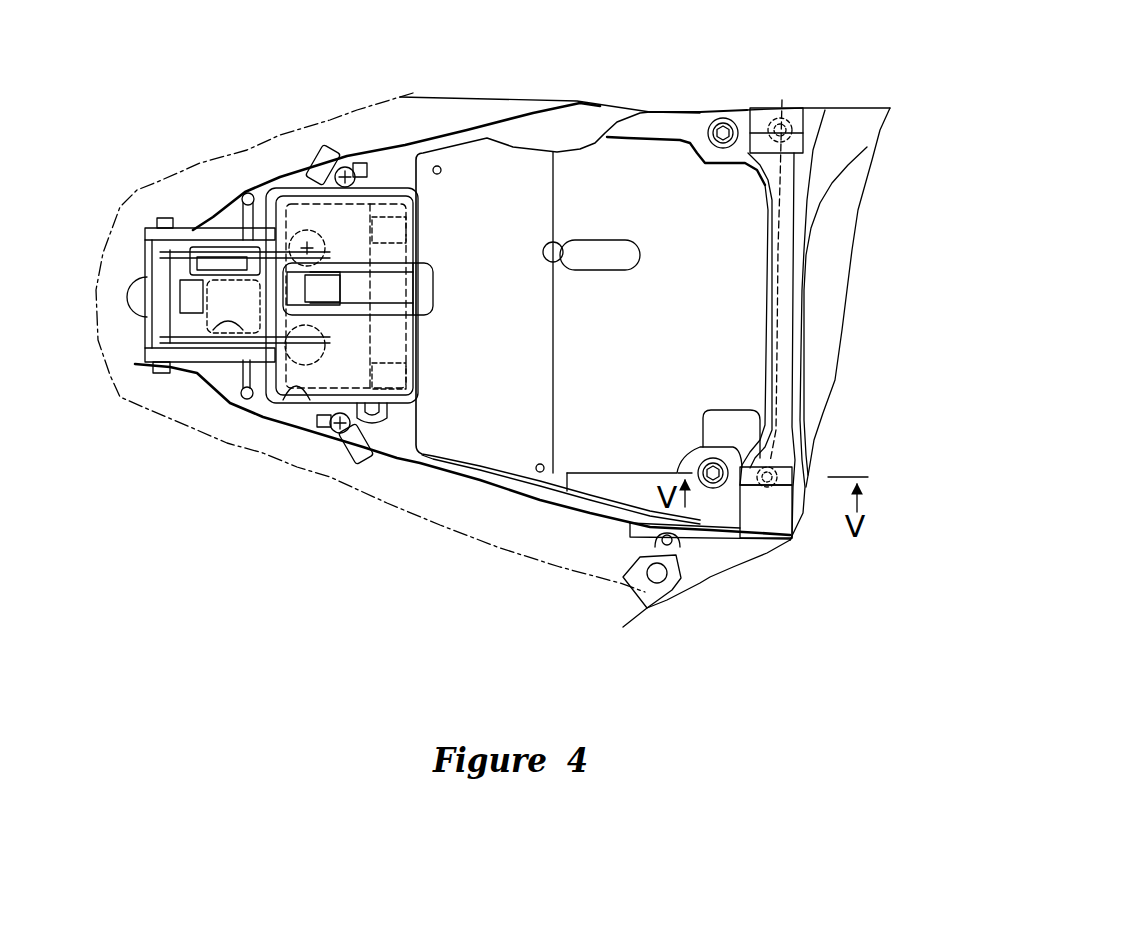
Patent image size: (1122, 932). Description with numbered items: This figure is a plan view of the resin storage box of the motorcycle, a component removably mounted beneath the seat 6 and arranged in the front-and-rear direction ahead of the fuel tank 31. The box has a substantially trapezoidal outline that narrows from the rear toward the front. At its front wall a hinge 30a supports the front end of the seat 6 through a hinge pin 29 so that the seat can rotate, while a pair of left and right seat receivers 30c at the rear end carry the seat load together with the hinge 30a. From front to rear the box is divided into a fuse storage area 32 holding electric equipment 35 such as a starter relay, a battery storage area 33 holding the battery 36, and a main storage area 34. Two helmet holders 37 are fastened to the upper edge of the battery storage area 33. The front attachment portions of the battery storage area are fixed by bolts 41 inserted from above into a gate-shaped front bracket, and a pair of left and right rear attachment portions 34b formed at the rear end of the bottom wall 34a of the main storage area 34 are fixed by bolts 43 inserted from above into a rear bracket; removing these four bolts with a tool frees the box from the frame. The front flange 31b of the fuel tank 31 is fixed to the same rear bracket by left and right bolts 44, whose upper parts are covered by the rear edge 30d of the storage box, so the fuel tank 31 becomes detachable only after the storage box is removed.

The seat 6 is at (350, 106).
The hinge pin 29 is at (163, 373).
The hinge 30a is at (148, 228).
The seat receiver 30c is at (767, 520).
The rear edge 30d is at (773, 337).
The fuel tank 31 is at (827, 106).
The front flange 31b is at (770, 493).
The fuse storage area 32 is at (228, 322).
The battery storage area 33 is at (303, 385).
The main storage area 34 is at (493, 453).
The bottom wall 34a is at (580, 367).
The rear attachment portion 34b is at (707, 117).
The electric equipment 35 is at (253, 260).
The battery 36 is at (299, 203).
The helmet holder 37 is at (320, 153).
The bolt 41 is at (312, 250).
The bolt 43 is at (723, 148).
The bolt 44 is at (780, 108).